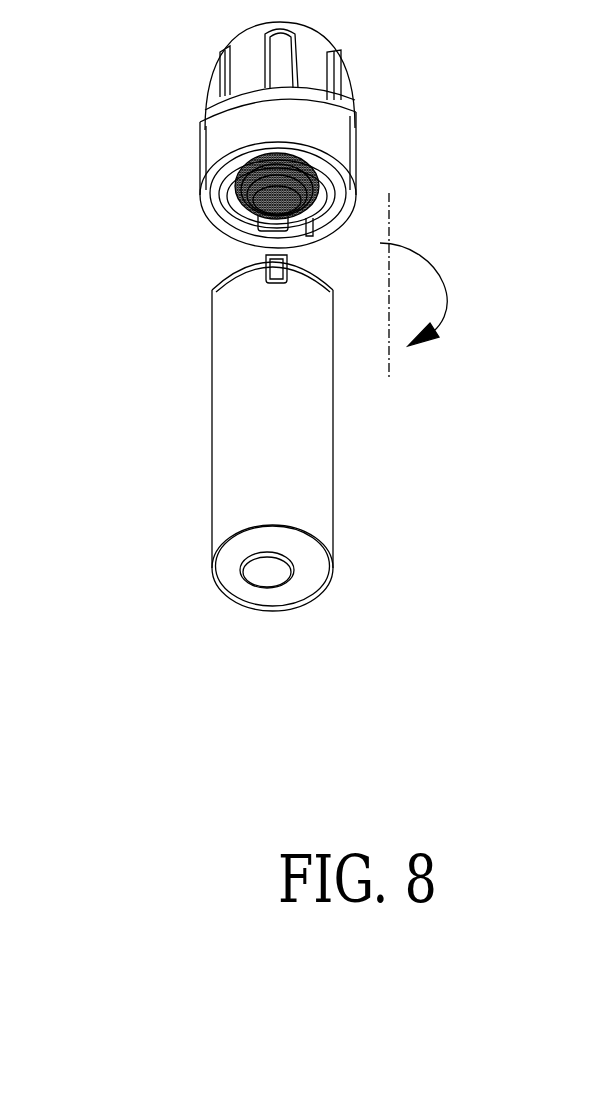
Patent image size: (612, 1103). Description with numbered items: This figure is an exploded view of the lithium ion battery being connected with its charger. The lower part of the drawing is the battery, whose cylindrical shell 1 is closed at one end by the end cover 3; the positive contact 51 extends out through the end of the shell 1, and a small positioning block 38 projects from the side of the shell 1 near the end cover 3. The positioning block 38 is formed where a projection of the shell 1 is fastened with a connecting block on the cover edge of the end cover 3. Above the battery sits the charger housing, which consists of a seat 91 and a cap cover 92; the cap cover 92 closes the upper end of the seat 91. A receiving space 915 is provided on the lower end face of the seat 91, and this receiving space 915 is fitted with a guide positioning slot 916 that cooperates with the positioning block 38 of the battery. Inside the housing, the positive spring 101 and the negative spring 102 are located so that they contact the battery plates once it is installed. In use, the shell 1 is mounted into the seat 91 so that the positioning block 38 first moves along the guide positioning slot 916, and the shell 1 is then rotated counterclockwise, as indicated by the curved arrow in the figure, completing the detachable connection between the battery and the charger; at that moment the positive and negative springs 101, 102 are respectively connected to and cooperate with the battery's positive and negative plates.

The shell 1 is at (230, 462).
The end cover 3 is at (213, 283).
The positioning block 38 is at (288, 268).
The positive contact 51 is at (269, 568).
The seat 91 is at (197, 148).
The cap cover 92 is at (208, 70).
The receiving space 915 is at (235, 213).
The guide positioning slot 916 is at (318, 209).
The positive spring 101 is at (353, 163).
The negative spring 102 is at (298, 155).